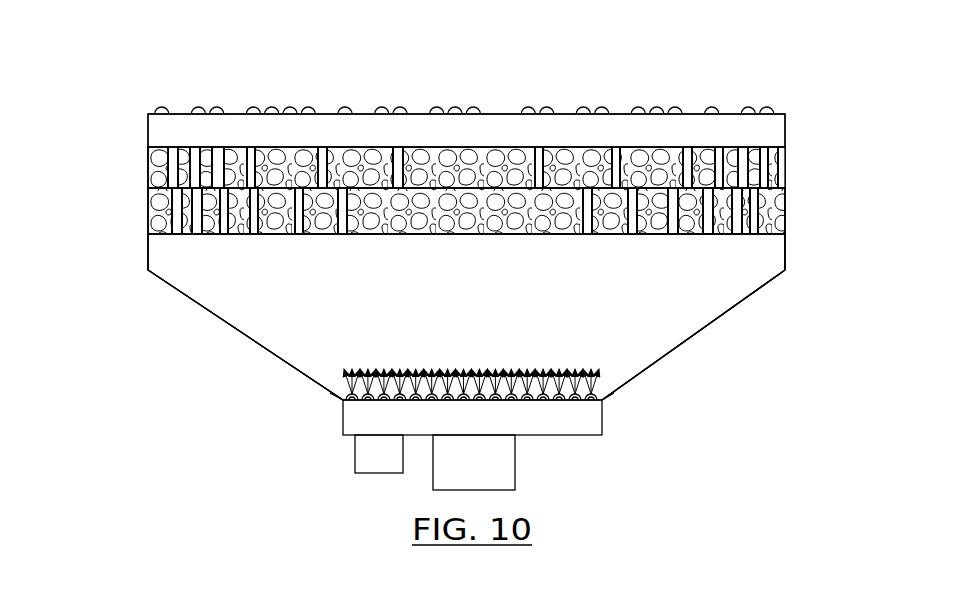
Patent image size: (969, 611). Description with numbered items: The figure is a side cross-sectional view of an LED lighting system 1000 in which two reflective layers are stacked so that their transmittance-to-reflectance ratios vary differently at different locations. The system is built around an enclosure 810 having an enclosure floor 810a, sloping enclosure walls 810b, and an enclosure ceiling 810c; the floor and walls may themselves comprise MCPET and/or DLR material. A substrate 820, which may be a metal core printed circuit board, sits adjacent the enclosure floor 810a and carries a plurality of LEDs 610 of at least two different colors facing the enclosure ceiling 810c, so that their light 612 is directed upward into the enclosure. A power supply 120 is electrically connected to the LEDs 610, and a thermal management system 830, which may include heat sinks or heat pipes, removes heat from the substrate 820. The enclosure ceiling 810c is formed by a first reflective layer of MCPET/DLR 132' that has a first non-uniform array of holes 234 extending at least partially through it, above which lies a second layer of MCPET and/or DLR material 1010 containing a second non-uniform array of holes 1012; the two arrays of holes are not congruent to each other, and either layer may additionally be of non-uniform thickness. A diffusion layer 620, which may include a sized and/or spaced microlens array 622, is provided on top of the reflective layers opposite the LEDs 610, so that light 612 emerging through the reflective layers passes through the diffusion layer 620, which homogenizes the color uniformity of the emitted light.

The LED lighting system 1000 is at (87, 112).
The diffusion layer 620 is at (148, 132).
The microlens array 622 is at (214, 108).
The second layer of MCPET and/or DLR material 1010 is at (148, 173).
The layer of MCPET/DLR 132' is at (441, 210).
The second non-uniform array of holes 1012 is at (393, 160).
The non-uniform array of holes 234 is at (338, 234).
The enclosure 810 is at (795, 247).
The enclosure floor 810a is at (272, 348).
The enclosure wall 810b is at (153, 252).
The enclosure ceiling 810c is at (469, 275).
The substrate 820 is at (493, 429).
The power supply 120 is at (395, 465).
The thermal management system 830 is at (493, 475).
The LEDs 610 is at (343, 399).
The light 612 is at (597, 378).